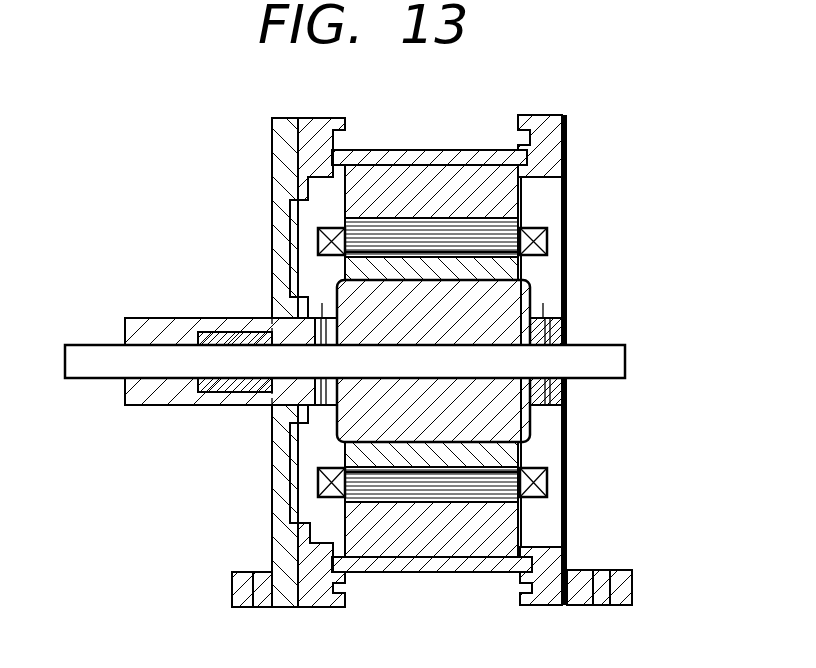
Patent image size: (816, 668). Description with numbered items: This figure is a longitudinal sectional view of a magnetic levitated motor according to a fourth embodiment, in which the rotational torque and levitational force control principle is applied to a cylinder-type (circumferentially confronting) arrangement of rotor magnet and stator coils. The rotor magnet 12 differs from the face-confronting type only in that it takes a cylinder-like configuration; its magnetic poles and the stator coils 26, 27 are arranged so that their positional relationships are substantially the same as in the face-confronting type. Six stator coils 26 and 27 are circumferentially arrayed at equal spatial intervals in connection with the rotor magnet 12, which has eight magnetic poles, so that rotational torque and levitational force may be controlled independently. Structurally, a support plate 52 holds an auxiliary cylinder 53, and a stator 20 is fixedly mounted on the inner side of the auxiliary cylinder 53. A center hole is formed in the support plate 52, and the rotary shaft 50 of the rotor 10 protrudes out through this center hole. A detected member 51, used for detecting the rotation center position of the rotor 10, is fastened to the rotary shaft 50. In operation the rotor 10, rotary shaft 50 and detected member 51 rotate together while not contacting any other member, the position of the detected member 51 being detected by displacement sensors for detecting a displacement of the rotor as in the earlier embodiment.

The rotor 10 is at (530, 293).
The rotor magnet 12 is at (520, 452).
The stator 20 is at (555, 532).
The stator coil 26 is at (547, 243).
The stator coil 27 is at (432, 362).
The rotary shaft 50 is at (80, 343).
The detected member 51 is at (158, 318).
The support plate 52 is at (272, 137).
The auxiliary cylinder 53 is at (445, 576).